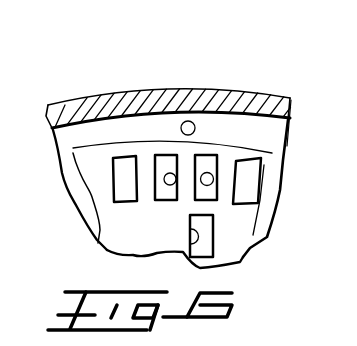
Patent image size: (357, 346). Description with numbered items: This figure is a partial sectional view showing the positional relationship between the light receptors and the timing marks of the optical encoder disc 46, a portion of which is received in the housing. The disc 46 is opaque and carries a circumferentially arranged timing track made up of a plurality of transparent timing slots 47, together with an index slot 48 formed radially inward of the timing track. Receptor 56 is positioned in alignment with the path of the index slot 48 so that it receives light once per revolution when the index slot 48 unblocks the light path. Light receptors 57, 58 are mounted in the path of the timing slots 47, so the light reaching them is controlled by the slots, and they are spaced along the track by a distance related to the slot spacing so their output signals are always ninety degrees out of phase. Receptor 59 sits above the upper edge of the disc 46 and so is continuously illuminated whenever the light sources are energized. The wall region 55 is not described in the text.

The optical encoder disc 46 is at (274, 155).
The timing slots 47 is at (124, 180).
The index slot 48 is at (207, 220).
The hatched peripheral wall 55 is at (74, 134).
The light receptor 56 is at (150, 256).
The light receptor 57 is at (171, 172).
The light receptor 58 is at (208, 172).
The light receptor 59 is at (190, 120).